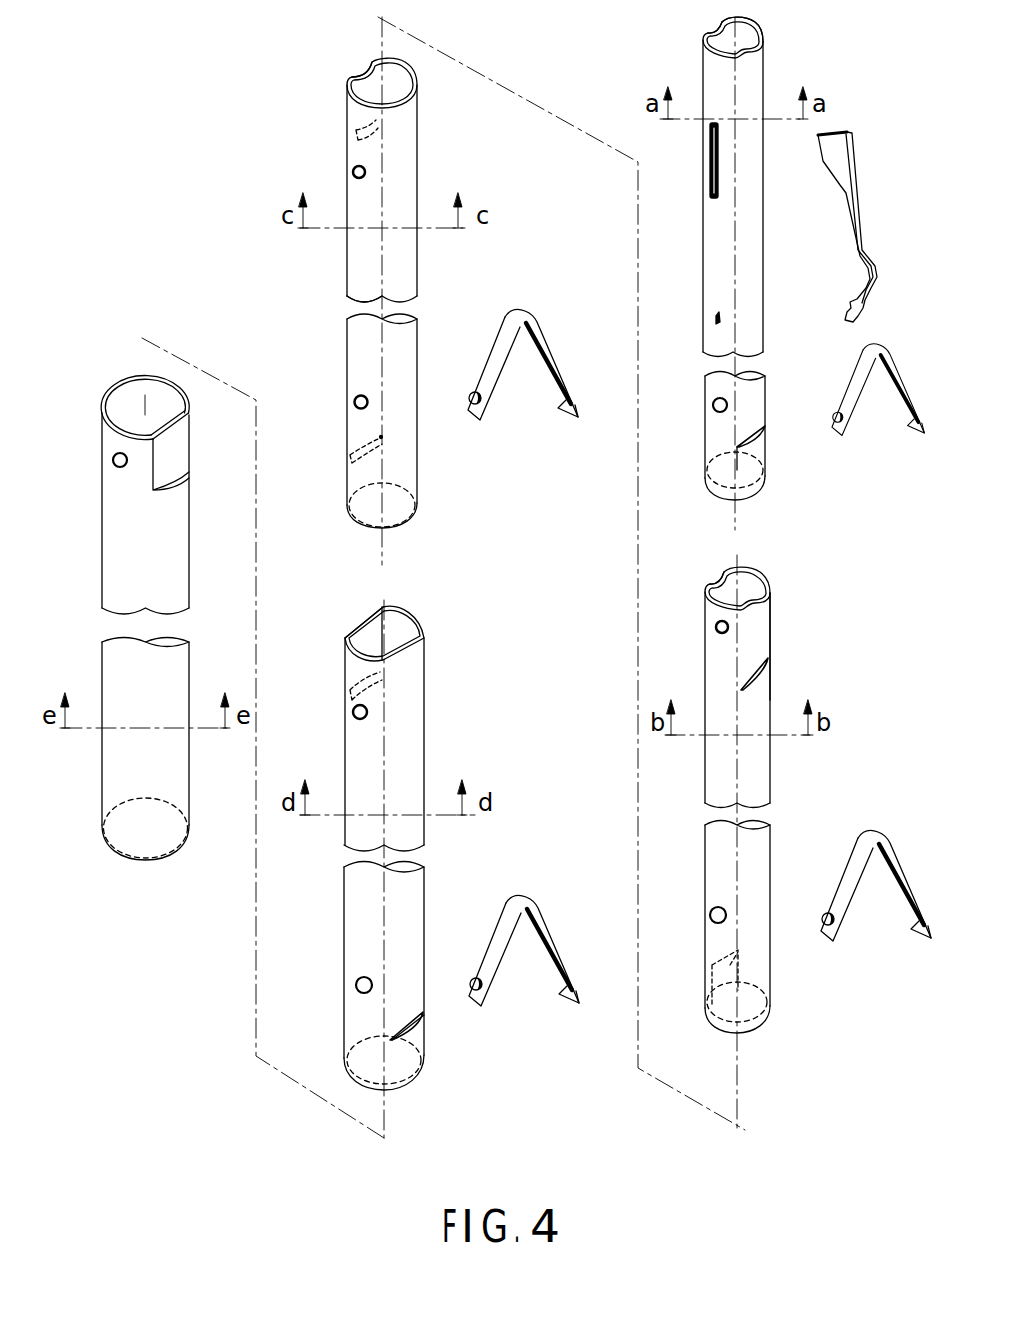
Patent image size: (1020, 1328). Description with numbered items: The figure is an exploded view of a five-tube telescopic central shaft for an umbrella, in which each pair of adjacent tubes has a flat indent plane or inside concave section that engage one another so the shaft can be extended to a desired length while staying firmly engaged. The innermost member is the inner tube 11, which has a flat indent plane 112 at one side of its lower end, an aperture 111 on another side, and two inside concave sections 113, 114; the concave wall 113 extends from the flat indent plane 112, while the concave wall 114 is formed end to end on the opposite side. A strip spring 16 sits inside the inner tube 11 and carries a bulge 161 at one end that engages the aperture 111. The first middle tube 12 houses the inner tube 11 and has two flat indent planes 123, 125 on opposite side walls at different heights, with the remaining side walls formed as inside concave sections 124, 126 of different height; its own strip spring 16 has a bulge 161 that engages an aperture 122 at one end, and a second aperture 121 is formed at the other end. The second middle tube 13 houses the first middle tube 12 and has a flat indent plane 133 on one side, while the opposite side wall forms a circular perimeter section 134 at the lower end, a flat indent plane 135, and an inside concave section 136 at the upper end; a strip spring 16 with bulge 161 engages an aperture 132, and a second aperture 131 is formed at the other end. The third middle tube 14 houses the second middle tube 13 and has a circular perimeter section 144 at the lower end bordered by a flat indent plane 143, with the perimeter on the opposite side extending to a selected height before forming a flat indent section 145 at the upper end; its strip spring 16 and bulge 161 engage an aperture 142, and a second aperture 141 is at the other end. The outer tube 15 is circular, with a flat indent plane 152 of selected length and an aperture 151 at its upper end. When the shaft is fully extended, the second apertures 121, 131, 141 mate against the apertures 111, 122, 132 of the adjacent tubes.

The inner tube 11 is at (712, 250).
The aperture 111 is at (710, 404).
The flat indent plane 112 is at (757, 452).
The inside concave section 113 is at (752, 45).
The inside concave section 114 is at (722, 30).
The first middle tube 12 is at (712, 765).
The second aperture 121 is at (714, 628).
The aperture 122 is at (708, 914).
The flat indent plane 123 is at (760, 782).
The inside concave section 124 is at (755, 612).
The flat indent plane 125 is at (718, 980).
The inside concave section 126 is at (720, 585).
The second middle tube 13 is at (405, 133).
The second aperture 131 is at (351, 172).
The aperture 132 is at (352, 403).
The flat indent plane 133 is at (405, 268).
The circular perimeter section 134 is at (363, 465).
The flat indent plane 135 is at (355, 290).
The inside concave section 136 is at (362, 72).
The third middle tube 14 is at (348, 888).
The second aperture 141 is at (352, 713).
The aperture 142 is at (352, 985).
The flat indent plane 143 is at (415, 672).
The circular perimeter section 144 is at (428, 1028).
The flat indent section 145 is at (363, 632).
The outer tube 15 is at (175, 548).
The aperture 151 is at (112, 462).
The flat indent plane 152 is at (170, 462).
The strip spring 16 is at (520, 312).
The bulge 161 is at (470, 395).